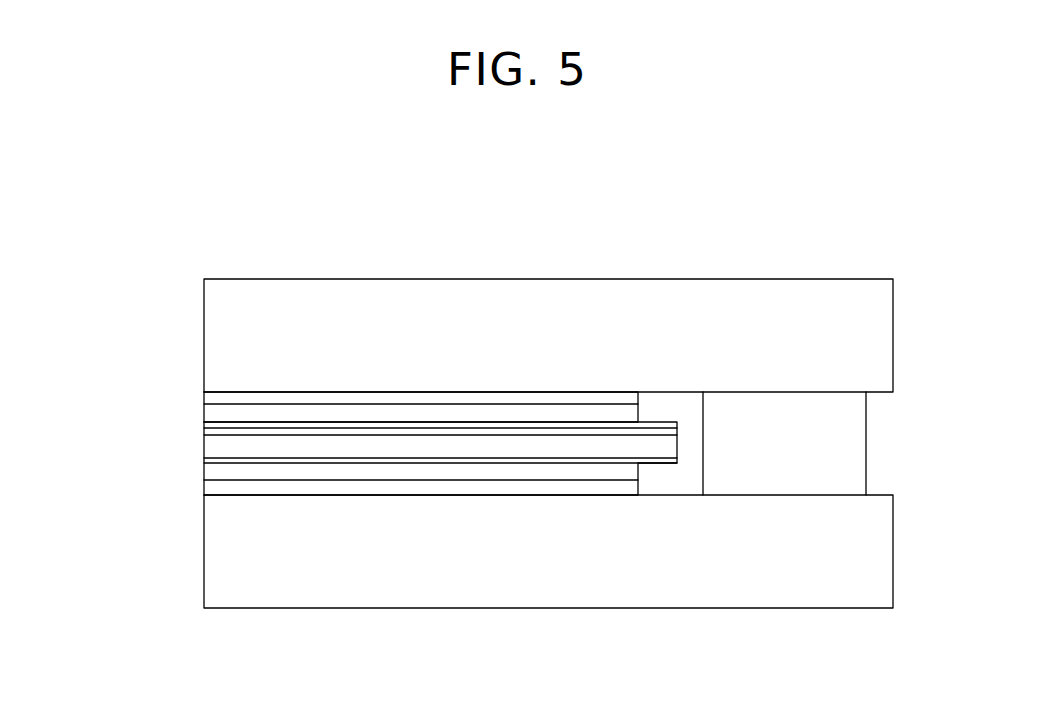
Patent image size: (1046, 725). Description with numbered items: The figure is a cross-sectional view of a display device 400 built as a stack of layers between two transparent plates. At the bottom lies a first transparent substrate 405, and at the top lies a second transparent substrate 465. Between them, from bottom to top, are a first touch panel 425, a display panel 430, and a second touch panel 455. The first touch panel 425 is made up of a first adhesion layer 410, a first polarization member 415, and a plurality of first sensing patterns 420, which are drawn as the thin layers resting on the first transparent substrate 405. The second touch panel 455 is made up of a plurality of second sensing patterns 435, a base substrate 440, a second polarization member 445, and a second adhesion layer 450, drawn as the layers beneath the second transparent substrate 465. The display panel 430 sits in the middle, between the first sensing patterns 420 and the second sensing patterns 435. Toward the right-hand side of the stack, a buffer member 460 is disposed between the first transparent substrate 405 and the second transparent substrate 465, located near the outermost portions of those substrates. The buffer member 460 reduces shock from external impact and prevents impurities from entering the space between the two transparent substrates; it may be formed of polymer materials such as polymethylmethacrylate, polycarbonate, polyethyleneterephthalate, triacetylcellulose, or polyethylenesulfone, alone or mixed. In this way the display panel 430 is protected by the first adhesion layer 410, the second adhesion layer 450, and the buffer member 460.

The display device 400 is at (563, 215).
The first transparent substrate 405 is at (208, 578).
The first adhesion layer 410 is at (207, 488).
The first polarization member 415 is at (207, 473).
The first sensing patterns 420 is at (207, 460).
The first touch panel 425 is at (130, 482).
The display panel 430 is at (207, 448).
The second sensing patterns 435 is at (207, 430).
The base substrate 440 is at (207, 424).
The second polarization member 445 is at (207, 408).
The second adhesion layer 450 is at (207, 393).
The second touch panel 455 is at (130, 362).
The buffer member 460 is at (789, 477).
The second transparent substrate 465 is at (208, 332).